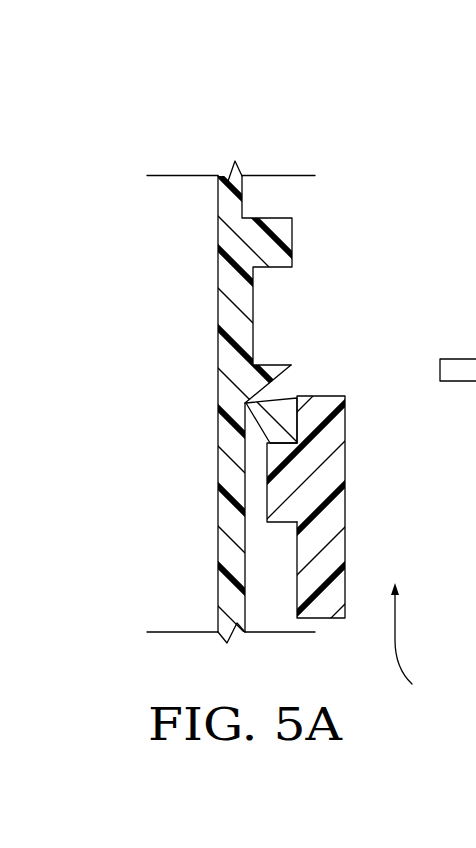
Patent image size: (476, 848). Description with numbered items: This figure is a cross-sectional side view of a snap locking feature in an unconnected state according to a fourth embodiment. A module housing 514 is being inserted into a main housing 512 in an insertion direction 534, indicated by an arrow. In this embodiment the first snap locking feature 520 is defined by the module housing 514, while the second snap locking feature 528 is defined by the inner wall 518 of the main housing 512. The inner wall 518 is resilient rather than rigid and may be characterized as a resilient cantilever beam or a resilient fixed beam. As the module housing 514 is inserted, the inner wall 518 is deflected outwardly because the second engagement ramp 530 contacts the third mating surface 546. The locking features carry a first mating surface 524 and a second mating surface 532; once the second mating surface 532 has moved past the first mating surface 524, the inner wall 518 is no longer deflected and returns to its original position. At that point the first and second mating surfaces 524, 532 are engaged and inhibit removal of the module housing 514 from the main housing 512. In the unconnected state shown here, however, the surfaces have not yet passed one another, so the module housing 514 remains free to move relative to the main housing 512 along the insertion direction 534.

The main housing 512 is at (213, 160).
The inner wall 518 is at (232, 243).
The second mating surface 532 is at (272, 372).
The second snap locking feature 528 is at (258, 402).
The third mating surface 546 is at (245, 418).
The second engagement ramp 530 is at (290, 399).
The module housing 514 is at (356, 472).
The first snap locking feature 520 is at (275, 497).
The first mating surface 524 is at (275, 520).
The insertion direction 534 is at (421, 648).